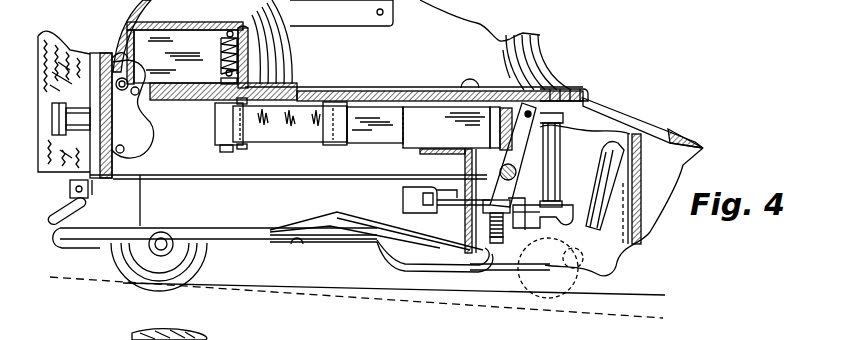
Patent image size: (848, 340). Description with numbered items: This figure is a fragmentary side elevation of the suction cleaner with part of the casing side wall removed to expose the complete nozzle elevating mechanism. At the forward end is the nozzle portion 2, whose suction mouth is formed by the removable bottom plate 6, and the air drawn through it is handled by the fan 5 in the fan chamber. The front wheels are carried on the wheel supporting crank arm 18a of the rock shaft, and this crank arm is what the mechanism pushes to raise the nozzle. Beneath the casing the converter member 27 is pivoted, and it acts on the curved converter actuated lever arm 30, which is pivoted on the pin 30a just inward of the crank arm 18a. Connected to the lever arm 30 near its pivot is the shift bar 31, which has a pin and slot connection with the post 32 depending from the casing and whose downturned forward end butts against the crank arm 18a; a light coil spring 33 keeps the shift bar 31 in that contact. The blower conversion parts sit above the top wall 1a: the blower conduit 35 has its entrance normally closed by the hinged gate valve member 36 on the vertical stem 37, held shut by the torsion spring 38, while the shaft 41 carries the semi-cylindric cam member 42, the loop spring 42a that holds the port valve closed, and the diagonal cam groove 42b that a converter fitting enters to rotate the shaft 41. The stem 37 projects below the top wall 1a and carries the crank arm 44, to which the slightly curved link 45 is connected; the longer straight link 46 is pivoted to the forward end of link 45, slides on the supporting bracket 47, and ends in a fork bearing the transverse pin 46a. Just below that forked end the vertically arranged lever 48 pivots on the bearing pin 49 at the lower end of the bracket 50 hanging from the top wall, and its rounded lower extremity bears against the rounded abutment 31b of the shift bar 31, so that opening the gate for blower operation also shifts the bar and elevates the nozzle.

The top wall 1a is at (320, 96).
The nozzle portion 2 is at (660, 123).
The fan 5 is at (370, 138).
The bottom plate 6 is at (378, 262).
The wheel supporting crank arm 18a is at (641, 164).
The converter member 27 is at (220, 208).
The converter actuated lever arm 30 is at (450, 198).
The pin 30a is at (501, 207).
The shift bar 31 is at (560, 215).
The rounded abutment 31b is at (503, 205).
The post 32 is at (565, 182).
The coil spring 33 is at (487, 214).
The blower conduit 35 is at (189, 36).
The gate valve member 36 is at (155, 50).
The vertical stem 37 is at (241, 47).
The torsion spring 38 is at (250, 62).
The shaft 41 is at (122, 92).
The cam member 42 is at (120, 60).
The loop spring 42a is at (150, 124).
The cam groove 42b is at (140, 96).
The crank arm 44 is at (222, 146).
The link 45 is at (262, 140).
The link 46 is at (355, 142).
The transverse pin 46a is at (568, 92).
The supporting bracket 47 is at (462, 163).
The lever 48 is at (536, 124).
The bearing pin 49 is at (470, 150).
The bracket 50 is at (490, 148).